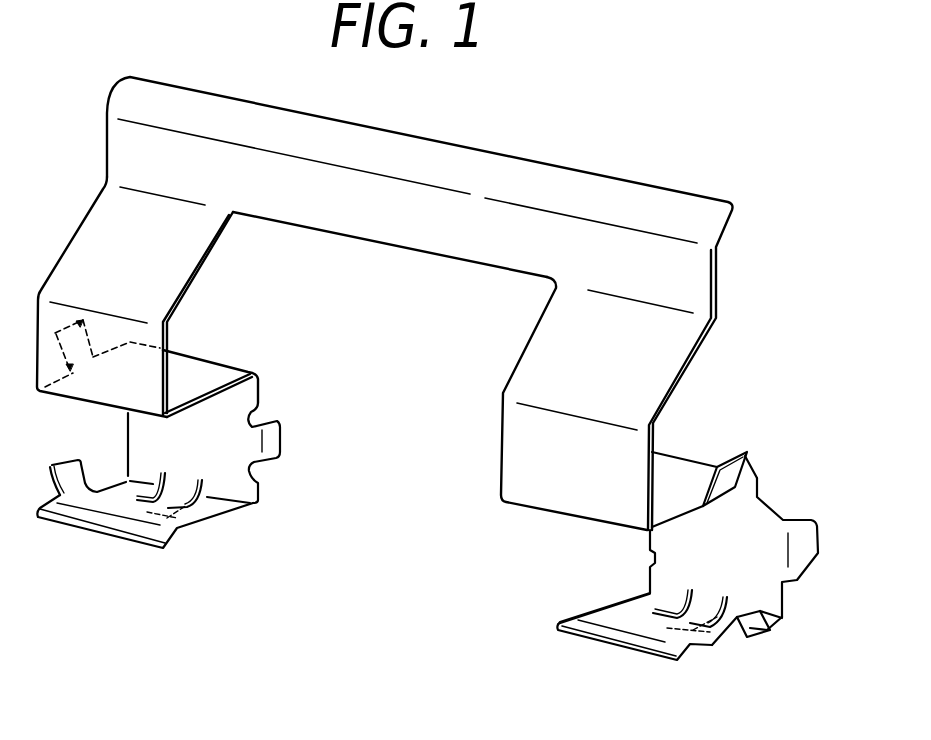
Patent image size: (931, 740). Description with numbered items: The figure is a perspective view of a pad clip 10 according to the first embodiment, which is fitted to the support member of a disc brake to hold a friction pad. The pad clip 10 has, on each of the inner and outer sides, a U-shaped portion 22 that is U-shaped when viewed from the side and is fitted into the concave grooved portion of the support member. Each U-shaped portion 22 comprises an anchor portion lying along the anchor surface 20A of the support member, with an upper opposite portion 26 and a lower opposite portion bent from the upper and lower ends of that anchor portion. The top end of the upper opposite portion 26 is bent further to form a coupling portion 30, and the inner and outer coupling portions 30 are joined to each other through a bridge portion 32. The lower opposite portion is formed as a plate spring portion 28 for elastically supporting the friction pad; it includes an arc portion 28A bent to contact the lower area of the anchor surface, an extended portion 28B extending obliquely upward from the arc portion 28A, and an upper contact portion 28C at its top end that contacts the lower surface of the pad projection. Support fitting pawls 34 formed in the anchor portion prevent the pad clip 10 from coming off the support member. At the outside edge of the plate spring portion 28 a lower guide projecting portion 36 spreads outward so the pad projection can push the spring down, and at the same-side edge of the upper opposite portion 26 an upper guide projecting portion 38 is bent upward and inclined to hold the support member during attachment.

The pad clip 10 is at (603, 170).
The bridge portion 32 is at (413, 151).
The coupling portion 30 is at (670, 345).
The upper opposite portion 26 is at (683, 473).
The upper guide projecting portion 38 is at (731, 474).
The anchor surface 20A is at (747, 520).
The support fitting pawl 34 is at (273, 443).
The U-shaped portion 22 is at (769, 636).
The plate spring portion 28 is at (582, 530).
The arc portion 28A is at (665, 600).
The extended portion 28B is at (597, 613).
The upper contact portion 28C is at (560, 637).
The lower guide projecting portion 36 is at (737, 638).